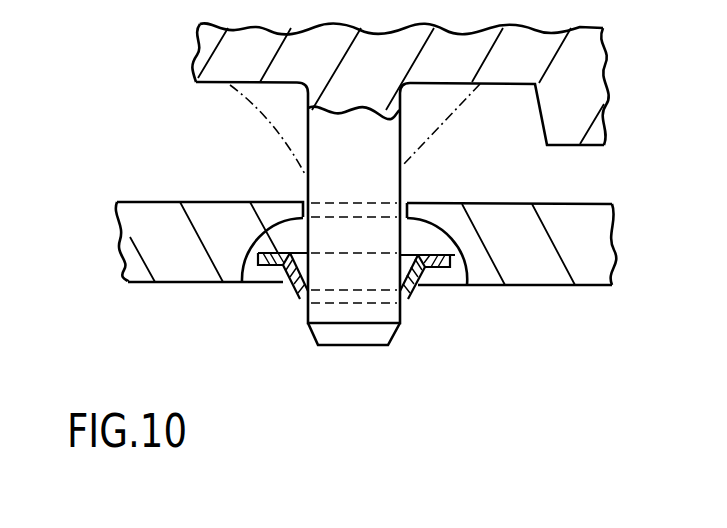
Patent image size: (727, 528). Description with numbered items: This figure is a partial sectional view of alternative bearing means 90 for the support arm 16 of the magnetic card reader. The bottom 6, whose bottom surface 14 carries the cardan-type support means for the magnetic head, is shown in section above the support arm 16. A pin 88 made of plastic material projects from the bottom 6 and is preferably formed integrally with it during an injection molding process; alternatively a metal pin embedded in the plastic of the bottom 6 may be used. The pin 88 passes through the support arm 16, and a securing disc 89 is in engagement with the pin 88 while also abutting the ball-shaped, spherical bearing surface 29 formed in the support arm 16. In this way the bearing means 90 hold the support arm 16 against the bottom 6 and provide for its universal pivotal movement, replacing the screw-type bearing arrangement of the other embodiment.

The bottom 6 is at (190, 38).
The bottom surface 14 is at (252, 90).
The support arm 16 is at (187, 283).
The bearing surface 29 is at (287, 263).
The pin 88 is at (348, 272).
The securing disc 89 is at (420, 285).
The bearing means 90 is at (276, 337).